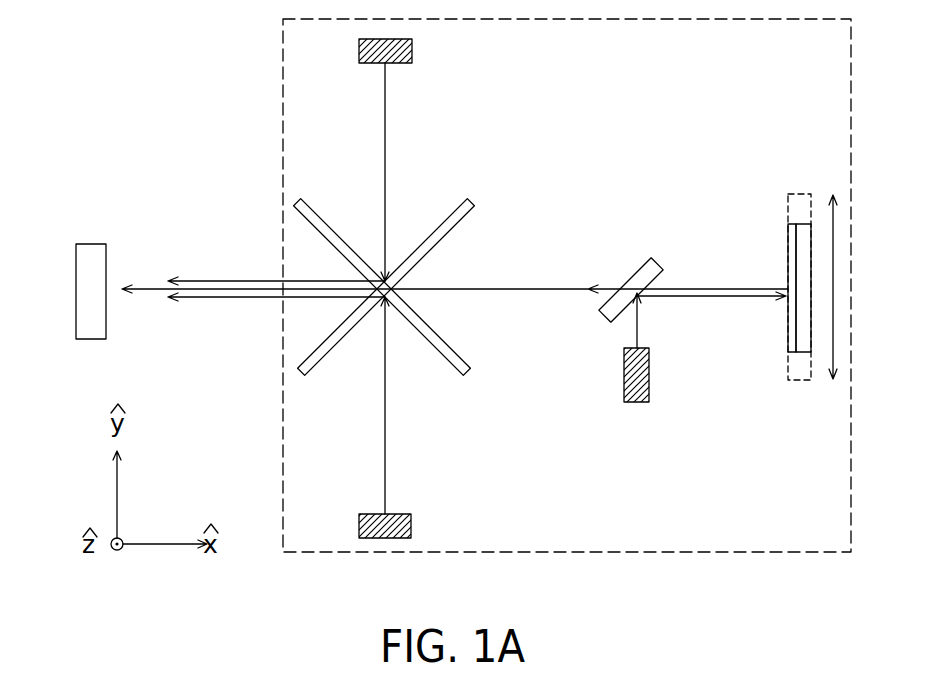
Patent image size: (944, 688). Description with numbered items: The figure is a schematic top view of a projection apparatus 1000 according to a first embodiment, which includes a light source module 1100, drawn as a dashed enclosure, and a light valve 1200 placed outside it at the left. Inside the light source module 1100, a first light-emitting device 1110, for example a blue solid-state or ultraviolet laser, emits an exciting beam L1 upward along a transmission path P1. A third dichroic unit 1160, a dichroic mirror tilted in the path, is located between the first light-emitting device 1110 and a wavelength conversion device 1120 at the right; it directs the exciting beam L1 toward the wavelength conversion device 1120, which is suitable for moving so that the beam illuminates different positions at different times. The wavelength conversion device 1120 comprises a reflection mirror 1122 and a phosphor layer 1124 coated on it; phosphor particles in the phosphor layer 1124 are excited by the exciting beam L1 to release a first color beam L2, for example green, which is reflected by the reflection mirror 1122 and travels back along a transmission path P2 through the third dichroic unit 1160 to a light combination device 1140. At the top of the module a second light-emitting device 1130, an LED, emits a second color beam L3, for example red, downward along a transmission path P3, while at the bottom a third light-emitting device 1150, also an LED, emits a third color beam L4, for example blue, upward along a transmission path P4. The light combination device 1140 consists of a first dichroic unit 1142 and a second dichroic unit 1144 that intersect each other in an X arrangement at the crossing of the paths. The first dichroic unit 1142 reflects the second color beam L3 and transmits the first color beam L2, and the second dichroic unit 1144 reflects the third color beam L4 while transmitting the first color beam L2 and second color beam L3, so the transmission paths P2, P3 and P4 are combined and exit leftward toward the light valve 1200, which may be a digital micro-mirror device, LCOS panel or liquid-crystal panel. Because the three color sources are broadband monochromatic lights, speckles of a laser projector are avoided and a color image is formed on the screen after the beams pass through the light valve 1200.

The projection apparatus 1000 is at (818, 620).
The light source module 1100 is at (283, 97).
The first light-emitting device 1110 is at (633, 403).
The wavelength conversion device 1120 is at (793, 351).
The reflection mirror 1122 is at (803, 328).
The phosphor layer 1124 is at (792, 328).
The second light-emitting device 1130 is at (410, 50).
The light combination device 1140 is at (456, 258).
The first dichroic unit 1142 is at (471, 200).
The second dichroic unit 1144 is at (427, 333).
The third light-emitting device 1150 is at (410, 527).
The third dichroic unit 1160 is at (602, 313).
The light valve 1200 is at (88, 252).
The exciting beam L1 is at (639, 327).
The first color beam L2 is at (257, 298).
The second color beam L3 is at (272, 280).
The third color beam L4 is at (212, 298).
The transmission path of the exciting beam P1 is at (727, 297).
The transmission path of the first color beam P2 is at (149, 288).
The transmission path of the second color beam P3 is at (228, 280).
The transmission path of the third color beam P4 is at (386, 388).